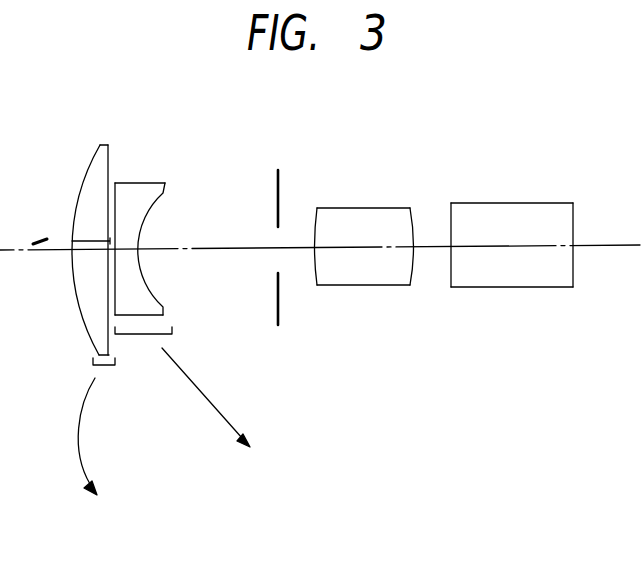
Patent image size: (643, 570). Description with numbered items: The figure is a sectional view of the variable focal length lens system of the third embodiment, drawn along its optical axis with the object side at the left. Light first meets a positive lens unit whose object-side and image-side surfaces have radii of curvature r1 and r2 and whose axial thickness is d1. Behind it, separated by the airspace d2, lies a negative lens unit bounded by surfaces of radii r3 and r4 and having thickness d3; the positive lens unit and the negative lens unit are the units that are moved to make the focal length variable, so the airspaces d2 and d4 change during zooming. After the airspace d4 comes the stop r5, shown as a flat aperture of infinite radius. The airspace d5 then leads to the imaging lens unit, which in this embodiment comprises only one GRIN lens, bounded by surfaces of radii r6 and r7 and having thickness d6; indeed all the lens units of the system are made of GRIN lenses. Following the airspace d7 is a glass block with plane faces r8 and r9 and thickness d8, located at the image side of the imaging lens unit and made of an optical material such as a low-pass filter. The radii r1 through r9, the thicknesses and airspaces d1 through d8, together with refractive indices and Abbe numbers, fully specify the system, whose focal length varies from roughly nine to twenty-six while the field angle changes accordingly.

The radius of curvature of the first lens surface r1 is at (92, 156).
The radius of curvature of the second lens surface r2 is at (108, 175).
The radius of curvature of the third lens surface r3 is at (117, 196).
The radius of curvature of the fourth lens surface r4 is at (162, 195).
The stop r5 is at (277, 190).
The radius of curvature of the sixth lens surface r6 is at (315, 227).
The radius of curvature of the seventh lens surface r7 is at (413, 210).
The radius of curvature of the eighth lens surface r8 is at (451, 217).
The radius of curvature of the ninth lens surface r9 is at (574, 217).
The thickness of the first lens d1 is at (87, 252).
The airspace between the first and second lenses d2 is at (72, 241).
The thickness of the second lens d3 is at (131, 251).
The airspace between the second lens and the stop d4 is at (207, 250).
The airspace between the stop and the third lens d5 is at (297, 249).
The thickness of the third lens d6 is at (355, 249).
The airspace between the third lens and the glass block d7 is at (430, 247).
The thickness of the glass block d8 is at (507, 247).